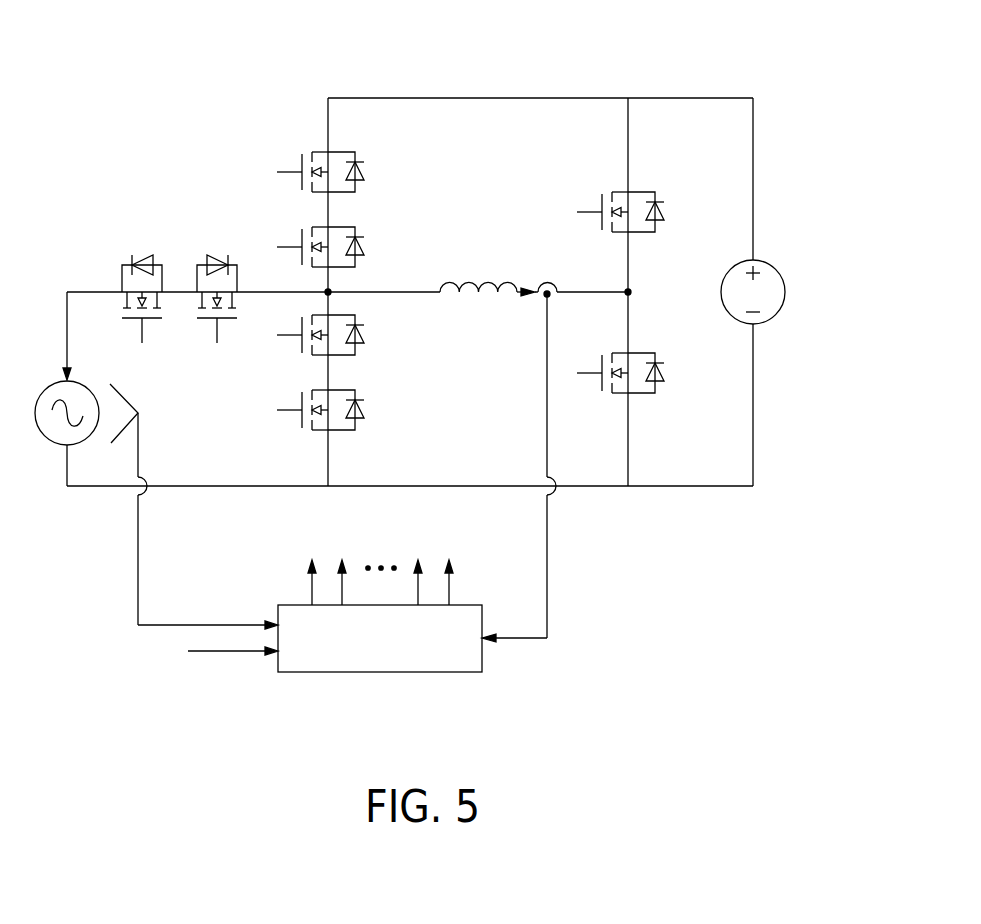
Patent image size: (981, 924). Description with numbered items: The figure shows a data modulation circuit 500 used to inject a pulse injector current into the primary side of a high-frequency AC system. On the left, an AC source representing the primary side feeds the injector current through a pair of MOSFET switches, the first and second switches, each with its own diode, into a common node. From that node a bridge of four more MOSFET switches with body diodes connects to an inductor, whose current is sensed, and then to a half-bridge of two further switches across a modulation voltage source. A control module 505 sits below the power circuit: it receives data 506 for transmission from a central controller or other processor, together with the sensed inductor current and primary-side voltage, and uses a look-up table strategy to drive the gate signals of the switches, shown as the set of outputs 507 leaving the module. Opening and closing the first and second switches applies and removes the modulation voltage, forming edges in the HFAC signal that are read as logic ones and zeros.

The data modulation circuit 500 is at (427, 374).
The control module 505 is at (380, 672).
The data 506 is at (228, 652).
The gate control signals 507 is at (276, 577).